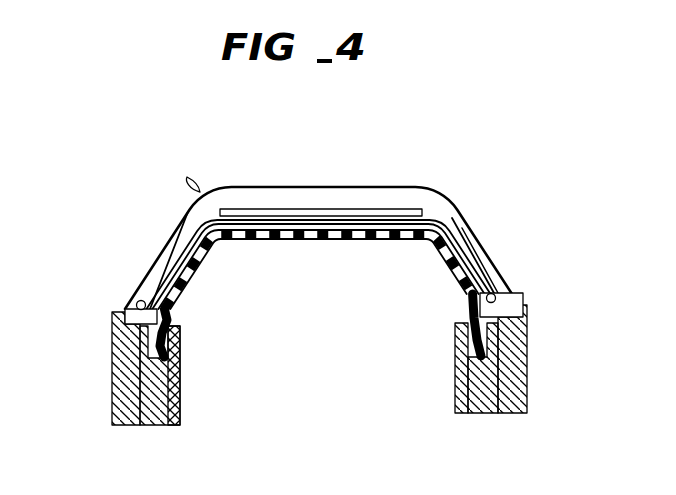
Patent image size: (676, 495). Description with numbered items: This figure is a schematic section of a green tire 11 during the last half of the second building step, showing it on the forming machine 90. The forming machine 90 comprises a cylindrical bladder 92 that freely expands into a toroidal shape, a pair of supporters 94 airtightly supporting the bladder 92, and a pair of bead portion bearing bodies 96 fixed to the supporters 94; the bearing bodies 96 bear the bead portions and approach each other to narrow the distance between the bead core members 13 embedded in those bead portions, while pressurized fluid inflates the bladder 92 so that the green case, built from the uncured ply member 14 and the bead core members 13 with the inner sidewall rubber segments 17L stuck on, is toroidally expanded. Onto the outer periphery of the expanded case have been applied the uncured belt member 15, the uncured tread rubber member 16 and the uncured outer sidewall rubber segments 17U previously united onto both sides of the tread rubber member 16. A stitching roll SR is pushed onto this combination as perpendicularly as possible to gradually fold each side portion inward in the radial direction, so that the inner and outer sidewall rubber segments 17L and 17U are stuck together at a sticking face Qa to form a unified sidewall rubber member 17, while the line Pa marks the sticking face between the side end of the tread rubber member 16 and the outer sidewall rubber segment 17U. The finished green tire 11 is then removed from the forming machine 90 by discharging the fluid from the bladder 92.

The green tire 11 is at (336, 183).
The uncured tread rubber member 16 is at (278, 186).
The uncured belt member 15 is at (389, 208).
The unified sidewall rubber member 17 is at (476, 246).
The uncured outer sidewall rubber segment 17U is at (460, 227).
The uncured inner sidewall rubber segment 17L is at (488, 267).
The sticking face line Pa is at (172, 228).
The sticking face Qa is at (162, 256).
The stitching roll SR is at (196, 178).
The bladder 92 is at (423, 246).
The uncured ply member 14 is at (212, 245).
The uncured bead core member 13 is at (133, 304).
The bead portion bearing body 96 is at (120, 373).
The supporter 94 is at (180, 380).
The forming machine 90 is at (449, 357).